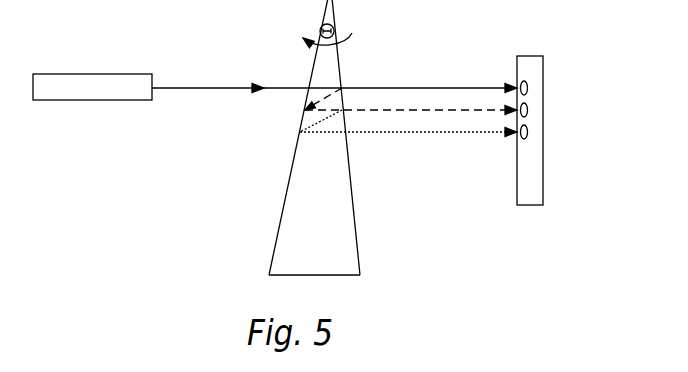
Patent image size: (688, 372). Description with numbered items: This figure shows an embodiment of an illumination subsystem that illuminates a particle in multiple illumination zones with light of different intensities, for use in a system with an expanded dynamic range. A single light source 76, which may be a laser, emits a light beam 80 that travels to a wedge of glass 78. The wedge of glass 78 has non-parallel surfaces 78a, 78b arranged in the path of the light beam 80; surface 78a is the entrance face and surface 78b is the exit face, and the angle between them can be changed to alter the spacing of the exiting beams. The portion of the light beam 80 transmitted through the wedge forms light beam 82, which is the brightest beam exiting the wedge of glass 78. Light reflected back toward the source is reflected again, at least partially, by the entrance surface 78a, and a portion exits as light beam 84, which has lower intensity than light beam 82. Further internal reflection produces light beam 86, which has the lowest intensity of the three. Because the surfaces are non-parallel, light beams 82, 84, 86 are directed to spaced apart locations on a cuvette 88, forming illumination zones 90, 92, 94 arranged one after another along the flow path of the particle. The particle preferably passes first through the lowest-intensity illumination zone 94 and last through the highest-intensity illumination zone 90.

The single light source 76 is at (91, 74).
The light beam 80 is at (222, 88).
The wedge of glass 78 is at (314, 141).
The surface 78a is at (278, 235).
The surface 78b is at (356, 225).
The light beam 82 is at (385, 87).
The light beam 84 is at (428, 110).
The light beam 86 is at (427, 134).
The cuvette 88 is at (557, 140).
The illumination zone 90 is at (527, 83).
The illumination zone 92 is at (528, 108).
The illumination zone 94 is at (528, 130).